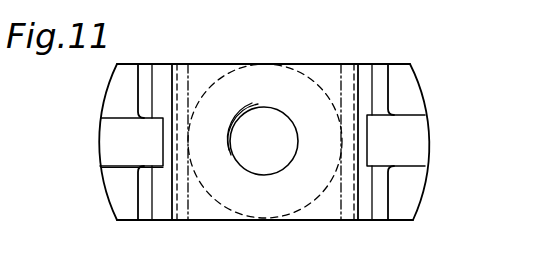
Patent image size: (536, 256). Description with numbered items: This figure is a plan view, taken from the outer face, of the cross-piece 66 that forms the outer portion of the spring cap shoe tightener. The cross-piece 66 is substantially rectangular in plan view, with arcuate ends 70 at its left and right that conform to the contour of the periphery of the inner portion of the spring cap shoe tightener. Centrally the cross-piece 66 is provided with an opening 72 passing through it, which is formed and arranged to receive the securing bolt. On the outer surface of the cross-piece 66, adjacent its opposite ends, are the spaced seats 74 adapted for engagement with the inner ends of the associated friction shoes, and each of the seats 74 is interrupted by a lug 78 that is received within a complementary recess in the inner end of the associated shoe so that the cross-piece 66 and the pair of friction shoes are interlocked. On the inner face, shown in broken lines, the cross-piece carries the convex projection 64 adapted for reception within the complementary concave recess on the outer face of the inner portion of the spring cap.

The convex projection 64 is at (312, 83).
The cross-piece 66 is at (421, 211).
The arcuate ends 70 is at (101, 110).
The opening 72 is at (242, 162).
The seats 74 is at (115, 86).
The lug 78 is at (113, 142).